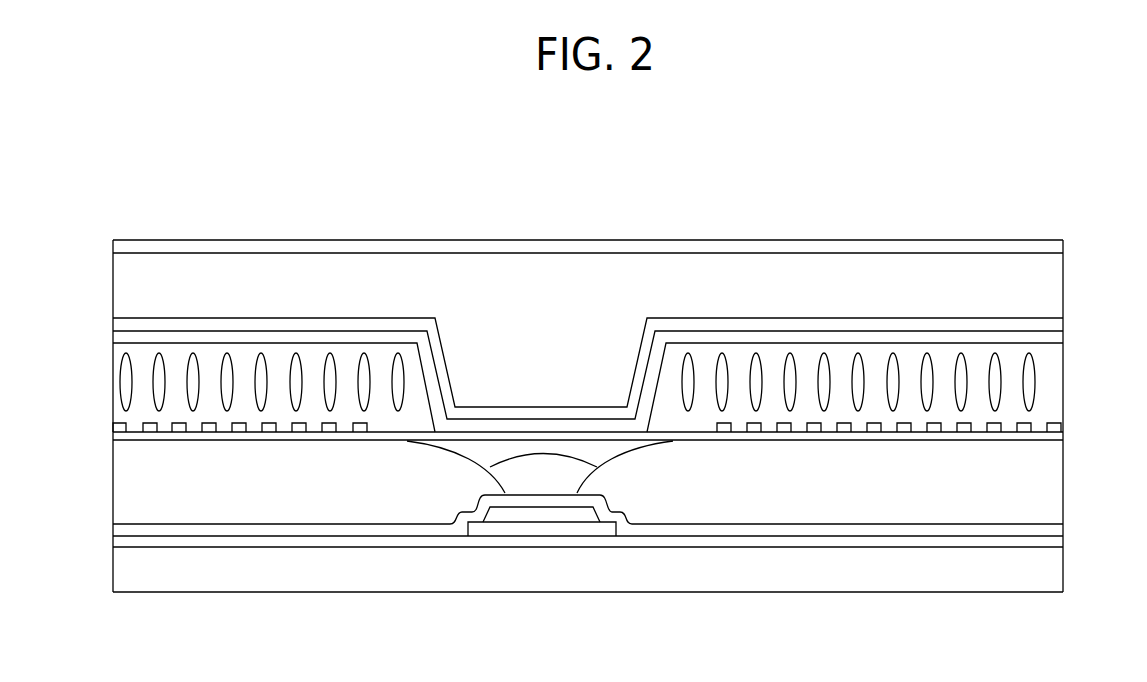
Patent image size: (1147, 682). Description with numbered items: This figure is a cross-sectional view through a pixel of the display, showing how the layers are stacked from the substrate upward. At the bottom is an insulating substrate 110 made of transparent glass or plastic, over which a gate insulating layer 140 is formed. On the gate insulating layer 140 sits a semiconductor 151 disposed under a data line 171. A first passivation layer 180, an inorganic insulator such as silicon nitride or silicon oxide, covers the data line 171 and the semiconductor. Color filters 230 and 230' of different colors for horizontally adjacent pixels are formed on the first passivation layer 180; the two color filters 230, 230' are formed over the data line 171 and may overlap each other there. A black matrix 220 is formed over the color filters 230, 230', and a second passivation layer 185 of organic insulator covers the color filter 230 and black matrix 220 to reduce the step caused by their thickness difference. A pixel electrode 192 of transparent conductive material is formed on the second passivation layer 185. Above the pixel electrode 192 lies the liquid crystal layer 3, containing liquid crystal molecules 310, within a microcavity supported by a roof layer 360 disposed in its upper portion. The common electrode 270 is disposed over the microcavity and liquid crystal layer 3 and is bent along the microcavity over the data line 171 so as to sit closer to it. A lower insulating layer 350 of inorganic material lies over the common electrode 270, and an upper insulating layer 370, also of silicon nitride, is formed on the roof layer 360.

The insulating substrate 110 is at (698, 570).
The gate insulating layer 140 is at (1045, 543).
The semiconductor 151 is at (580, 527).
The data line 171 is at (513, 515).
The first passivation layer 180 is at (1045, 528).
The second passivation layer 185 is at (592, 438).
The pixel electrode 192 is at (1055, 427).
The black matrix 220 is at (517, 472).
The color filter 230 is at (767, 471).
The color filter 230' is at (93, 485).
The common electrode 270 is at (1045, 340).
The liquid crystal layer 3 is at (1052, 391).
The liquid crystal molecules 310 is at (961, 372).
The lower insulating layer 350 is at (1045, 322).
The roof layer 360 is at (1040, 285).
The upper insulating layer 370 is at (838, 247).